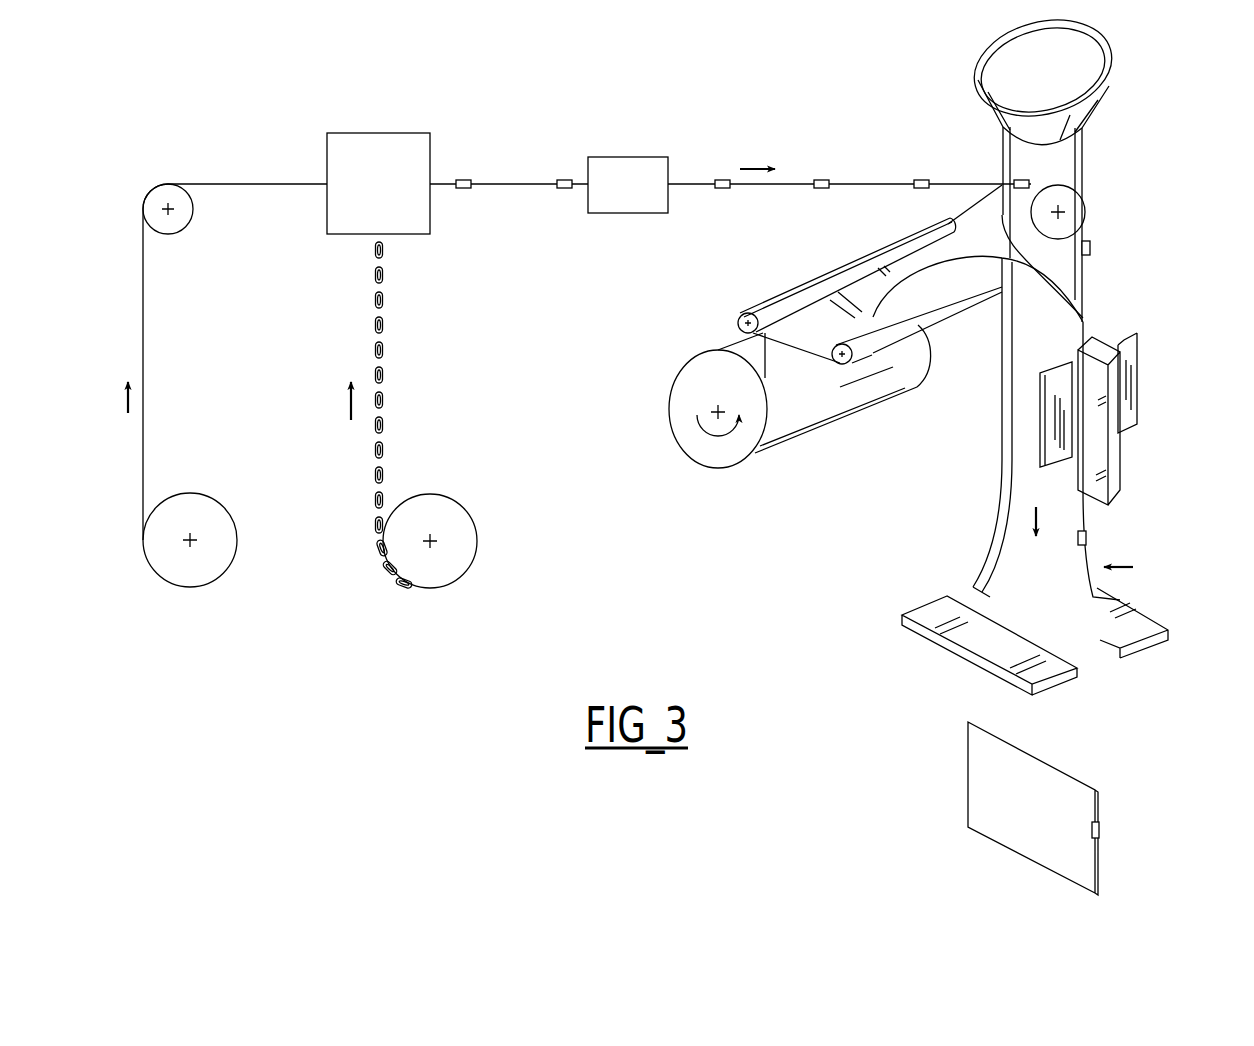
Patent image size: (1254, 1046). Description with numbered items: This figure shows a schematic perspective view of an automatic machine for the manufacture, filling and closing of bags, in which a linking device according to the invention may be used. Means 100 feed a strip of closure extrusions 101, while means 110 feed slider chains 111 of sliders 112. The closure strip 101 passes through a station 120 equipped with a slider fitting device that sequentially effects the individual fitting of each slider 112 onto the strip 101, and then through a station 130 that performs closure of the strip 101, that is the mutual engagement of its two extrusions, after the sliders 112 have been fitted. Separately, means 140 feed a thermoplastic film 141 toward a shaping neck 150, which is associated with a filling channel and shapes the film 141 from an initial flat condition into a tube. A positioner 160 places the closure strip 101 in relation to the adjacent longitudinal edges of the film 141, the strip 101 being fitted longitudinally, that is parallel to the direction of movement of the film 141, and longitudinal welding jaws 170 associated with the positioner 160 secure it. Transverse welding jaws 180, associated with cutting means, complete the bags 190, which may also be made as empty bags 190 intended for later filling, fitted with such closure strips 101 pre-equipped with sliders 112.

The means for the feeding of a strip of closure extrusions 100 is at (180, 590).
The strip of closure extrusions 101 is at (146, 328).
The means for the feeding of slider chains 110 is at (453, 592).
The slider chains 111 is at (373, 458).
The sliders 112 is at (466, 178).
The station with a slider fitting device 120 is at (313, 142).
The station for closure of the strips 130 is at (655, 142).
The means for the feeding of a thermoplastic film 140 is at (684, 458).
The thermoplastic film 141 is at (822, 306).
The shaping neck 150 is at (970, 322).
The positioner of the closure strip 160 is at (1122, 74).
The longitudinal welding jaws 170 is at (1055, 358).
The transverse welding jaws 180 is at (1080, 693).
The bags 190 is at (1110, 810).